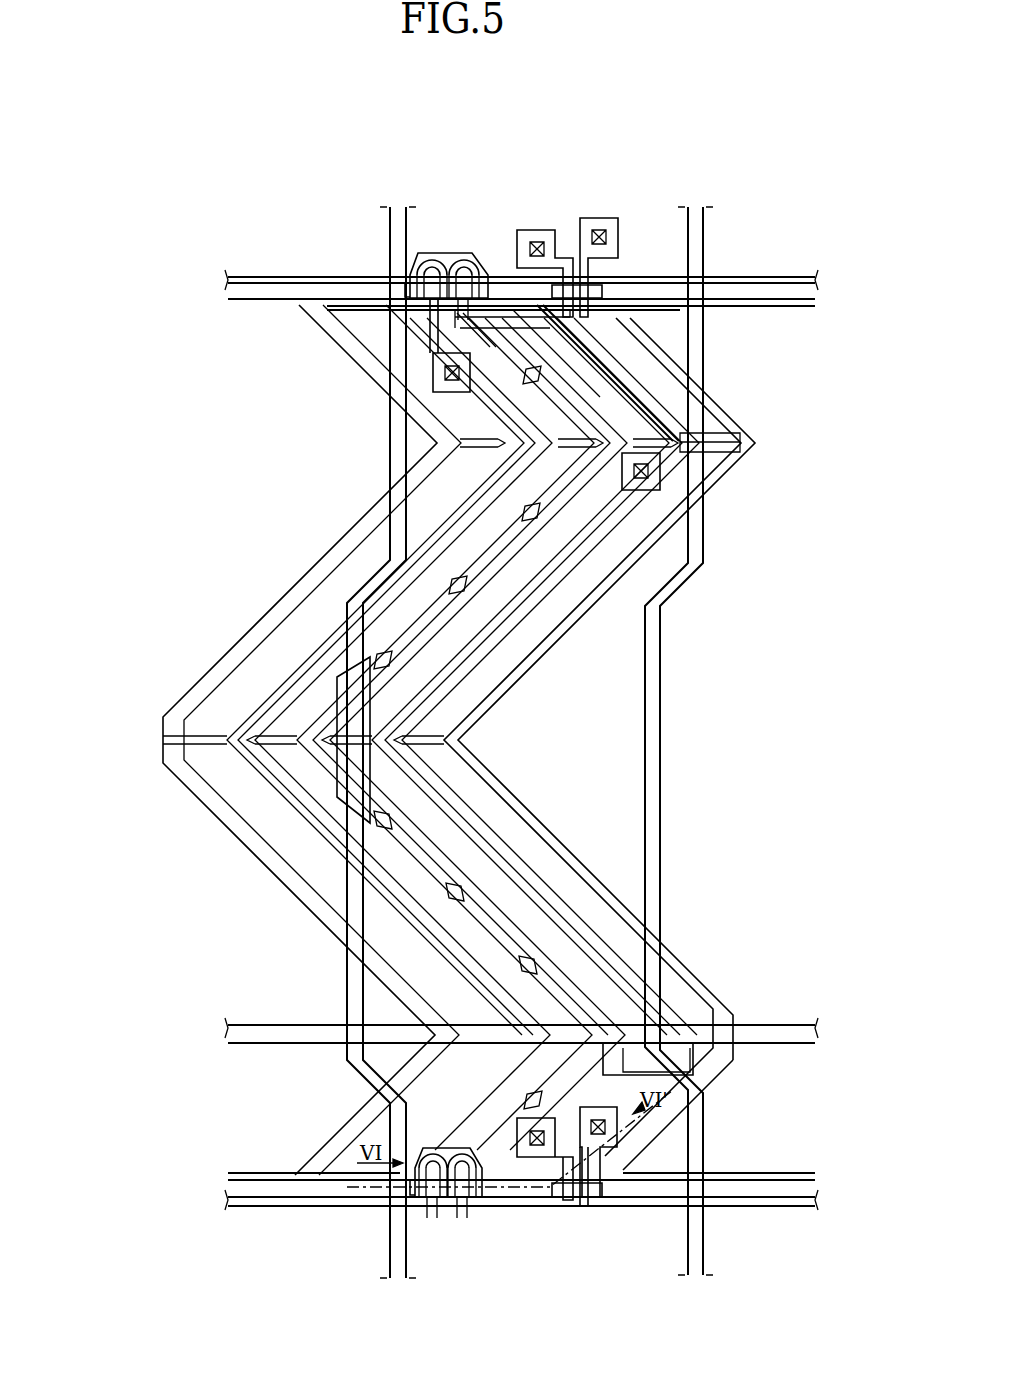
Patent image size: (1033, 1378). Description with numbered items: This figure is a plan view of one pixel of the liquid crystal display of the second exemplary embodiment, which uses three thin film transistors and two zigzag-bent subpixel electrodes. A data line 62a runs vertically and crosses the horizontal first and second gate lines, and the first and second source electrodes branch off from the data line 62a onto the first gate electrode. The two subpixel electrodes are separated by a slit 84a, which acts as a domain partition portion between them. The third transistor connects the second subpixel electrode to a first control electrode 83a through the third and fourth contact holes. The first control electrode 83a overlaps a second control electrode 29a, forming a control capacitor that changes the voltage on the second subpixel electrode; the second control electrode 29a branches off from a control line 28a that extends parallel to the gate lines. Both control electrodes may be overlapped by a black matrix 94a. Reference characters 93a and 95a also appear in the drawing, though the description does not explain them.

The control line 28a is at (767, 1025).
The second control electrode 29a is at (717, 1050).
The data line 62a is at (390, 437).
The first control electrode 83a is at (700, 1090).
The slit 84a is at (450, 640).
The pixel electrode branch 93a is at (480, 825).
The black matrix 94a is at (340, 690).
The pixel electrode edge 95a is at (540, 860).